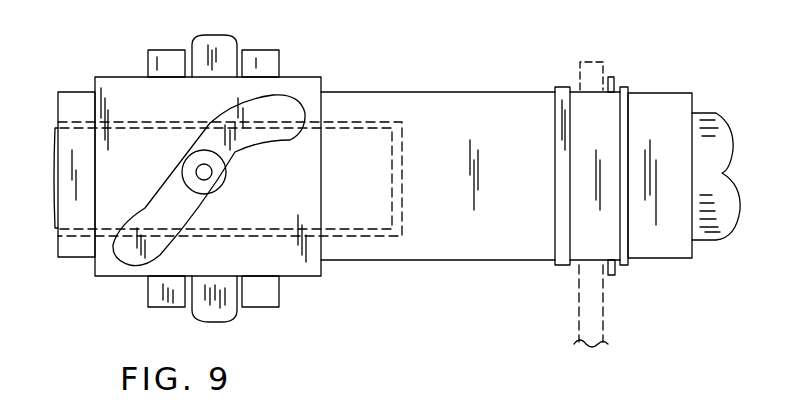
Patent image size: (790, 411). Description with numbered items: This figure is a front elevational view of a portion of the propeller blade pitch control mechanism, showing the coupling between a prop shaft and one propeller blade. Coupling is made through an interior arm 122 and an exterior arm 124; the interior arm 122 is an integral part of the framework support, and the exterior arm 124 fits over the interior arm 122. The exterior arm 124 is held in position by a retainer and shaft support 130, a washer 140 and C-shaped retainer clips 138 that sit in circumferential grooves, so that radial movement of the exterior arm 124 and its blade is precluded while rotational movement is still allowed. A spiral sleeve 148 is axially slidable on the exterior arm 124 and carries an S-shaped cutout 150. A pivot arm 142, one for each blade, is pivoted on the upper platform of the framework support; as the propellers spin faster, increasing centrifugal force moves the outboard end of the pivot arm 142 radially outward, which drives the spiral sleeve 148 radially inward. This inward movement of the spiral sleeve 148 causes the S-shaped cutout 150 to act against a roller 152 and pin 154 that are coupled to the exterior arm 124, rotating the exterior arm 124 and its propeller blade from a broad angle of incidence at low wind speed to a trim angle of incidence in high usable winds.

The interior arm 122 is at (357, 121).
The exterior arm 124 is at (652, 93).
The retainer and shaft support 130 is at (603, 322).
The C-shaped retainer clip 138 is at (612, 275).
The washer 140 is at (611, 77).
The pivot arm 142 is at (225, 36).
The spiral sleeve 148 is at (292, 277).
The S-shaped cutout 150 is at (280, 95).
The roller 152 is at (208, 185).
The pin 154 is at (200, 172).